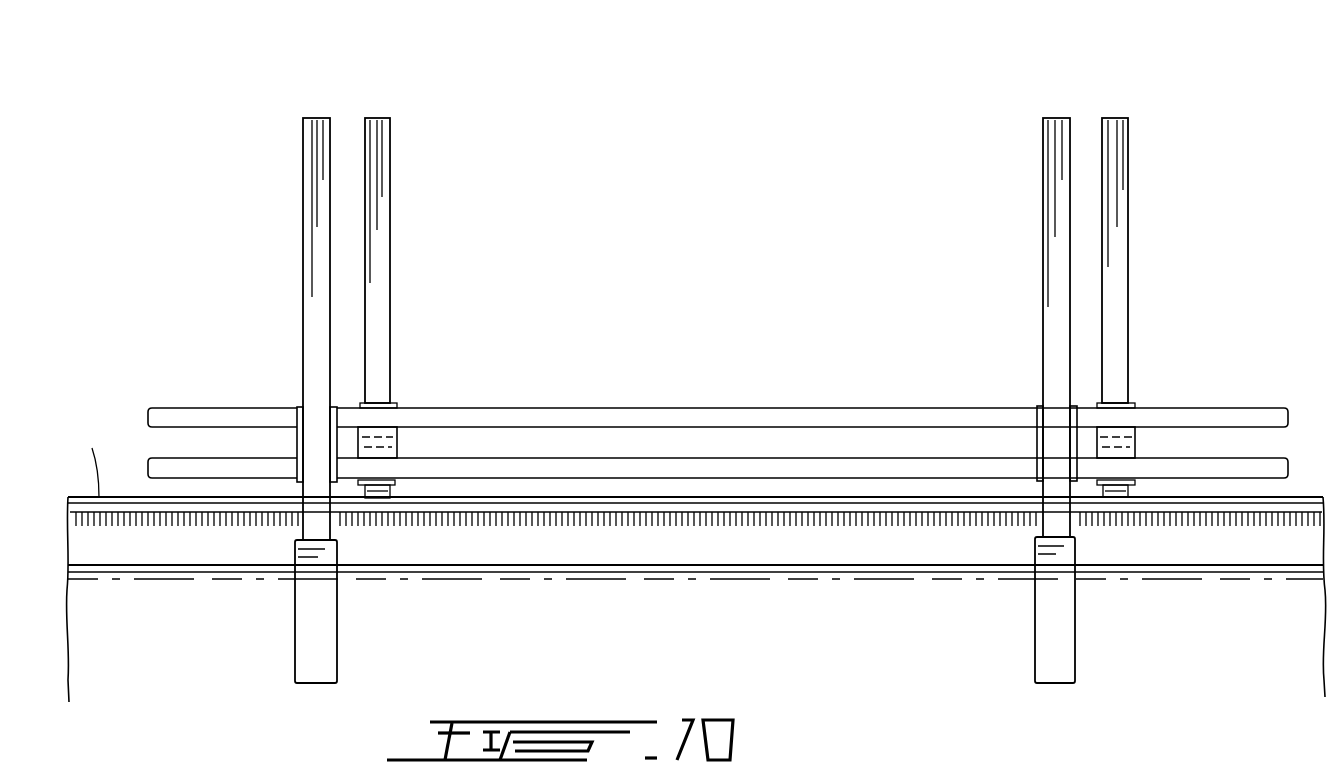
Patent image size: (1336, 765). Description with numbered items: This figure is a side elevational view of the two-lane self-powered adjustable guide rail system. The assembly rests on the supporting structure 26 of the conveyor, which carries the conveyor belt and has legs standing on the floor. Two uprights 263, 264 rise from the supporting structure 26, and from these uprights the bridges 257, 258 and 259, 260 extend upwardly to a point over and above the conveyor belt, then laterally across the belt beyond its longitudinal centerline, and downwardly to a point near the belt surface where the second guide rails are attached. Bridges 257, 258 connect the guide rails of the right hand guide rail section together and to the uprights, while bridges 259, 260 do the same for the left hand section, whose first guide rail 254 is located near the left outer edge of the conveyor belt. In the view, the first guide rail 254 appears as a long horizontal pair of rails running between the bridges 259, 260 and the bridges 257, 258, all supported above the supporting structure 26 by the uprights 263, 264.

The supporting structure 26 is at (138, 640).
The first guide rail 254 is at (650, 416).
The bridge 257 is at (380, 117).
The bridge 258 is at (1110, 117).
The bridge 259 is at (318, 117).
The bridge 260 is at (1062, 117).
The upright 263 is at (323, 635).
The upright 264 is at (1050, 608).